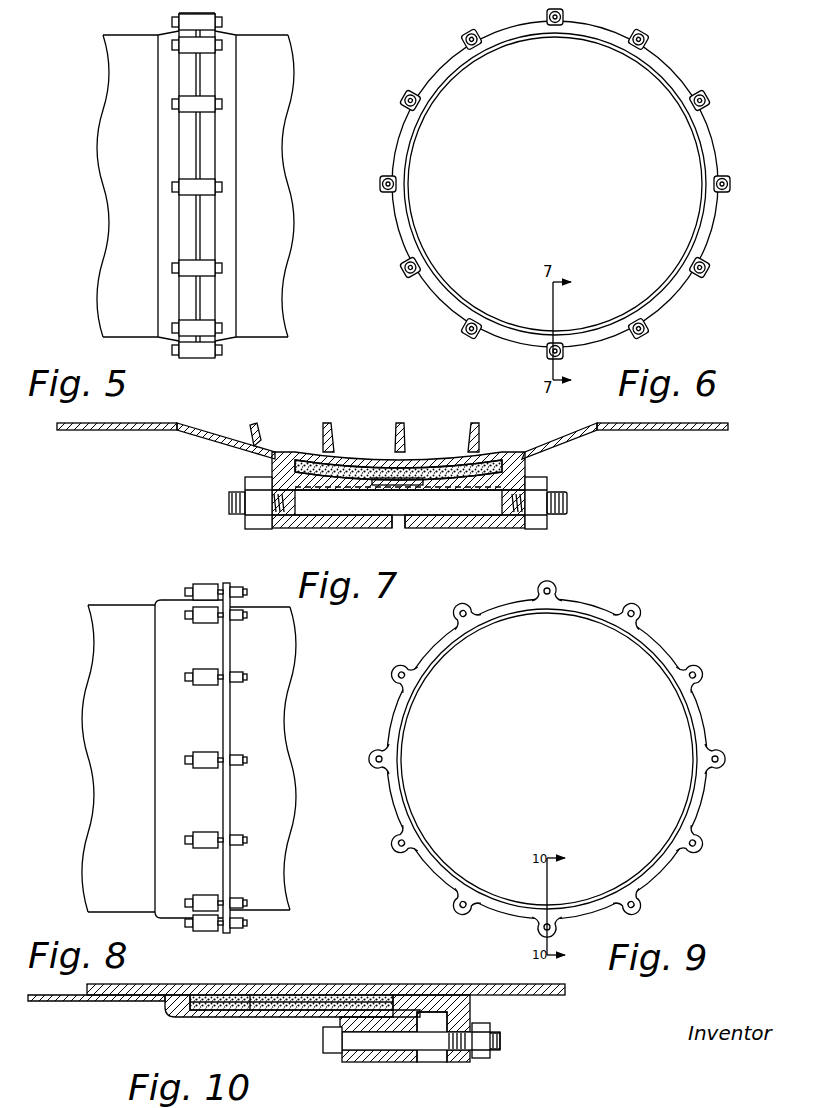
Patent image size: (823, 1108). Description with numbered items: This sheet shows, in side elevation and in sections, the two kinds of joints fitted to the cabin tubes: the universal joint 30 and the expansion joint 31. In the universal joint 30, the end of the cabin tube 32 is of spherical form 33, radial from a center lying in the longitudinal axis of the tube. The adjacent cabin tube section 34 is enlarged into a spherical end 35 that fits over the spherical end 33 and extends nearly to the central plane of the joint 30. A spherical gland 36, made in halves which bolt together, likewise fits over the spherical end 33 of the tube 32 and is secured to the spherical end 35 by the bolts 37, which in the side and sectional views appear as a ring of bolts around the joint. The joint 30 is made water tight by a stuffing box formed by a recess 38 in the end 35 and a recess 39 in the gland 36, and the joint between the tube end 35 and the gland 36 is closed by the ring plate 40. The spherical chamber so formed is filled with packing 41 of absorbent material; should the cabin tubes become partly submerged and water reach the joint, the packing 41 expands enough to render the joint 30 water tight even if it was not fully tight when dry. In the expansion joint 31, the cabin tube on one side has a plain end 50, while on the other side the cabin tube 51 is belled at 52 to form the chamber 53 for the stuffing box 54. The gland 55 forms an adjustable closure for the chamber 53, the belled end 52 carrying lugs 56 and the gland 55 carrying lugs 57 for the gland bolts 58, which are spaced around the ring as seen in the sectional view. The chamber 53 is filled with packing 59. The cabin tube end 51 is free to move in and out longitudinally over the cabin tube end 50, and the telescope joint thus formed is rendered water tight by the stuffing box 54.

In FIG. 5, the universal joint 30 is at (198, 346).
In FIG. 7, the universal joint 30 is at (400, 524).
In FIG. 8, the expansion joint 31 is at (226, 583).
In FIG. 10, the expansion joint 31 is at (432, 1064).
In FIG. 5, the cabin tube 32 is at (293, 97).
In FIG. 6, the cabin tube 32 is at (412, 149).
In FIG. 7, the cabin tube 32 is at (672, 432).
In FIG. 5, the spherical end 33 is at (226, 340).
In FIG. 7, the spherical end 33 is at (584, 437).
In FIG. 5, the cabin tube section 34 is at (108, 100).
In FIG. 7, the cabin tube section 34 is at (113, 432).
In FIG. 5, the spherical end 35 is at (171, 343).
In FIG. 7, the spherical end 35 is at (213, 444).
In FIG. 6, the spherical gland 36 is at (381, 183).
In FIG. 7, the spherical gland 36 is at (527, 461).
In FIG. 5, the bolts 37 is at (176, 268).
In FIG. 6, the bolts 37 is at (380, 196).
In FIG. 7, the bolts 37 is at (570, 512).
In FIG. 7, the recess 38 is at (330, 474).
In FIG. 7, the recess 39 is at (465, 480).
In FIG. 7, the ring plate 40 is at (405, 482).
In FIG. 7, the packing 41 is at (434, 468).
In FIG. 8, the plain end 50 is at (290, 693).
In FIG. 9, the plain end 50 is at (402, 737).
In FIG. 10, the plain end 50 is at (555, 993).
In FIG. 8, the cabin tube 51 is at (88, 696).
In FIG. 10, the cabin tube 51 is at (60, 1003).
In FIG. 8, the belled end 52 is at (189, 759).
In FIG. 10, the belled end 52 is at (176, 1019).
In FIG. 10, the chamber 53 is at (228, 1012).
In FIG. 10, the stuffing box 54 is at (296, 1013).
In FIG. 10, the gland 55 is at (475, 1001).
In FIG. 8, the lugs 56 is at (216, 757).
In FIG. 10, the lugs 56 is at (358, 1064).
In FIG. 9, the lugs 57 is at (375, 752).
In FIG. 10, the lugs 57 is at (458, 1064).
In FIG. 9, the gland bolts 58 is at (377, 773).
In FIG. 10, the gland bolts 58 is at (500, 1049).
In FIG. 10, the packing 59 is at (302, 998).